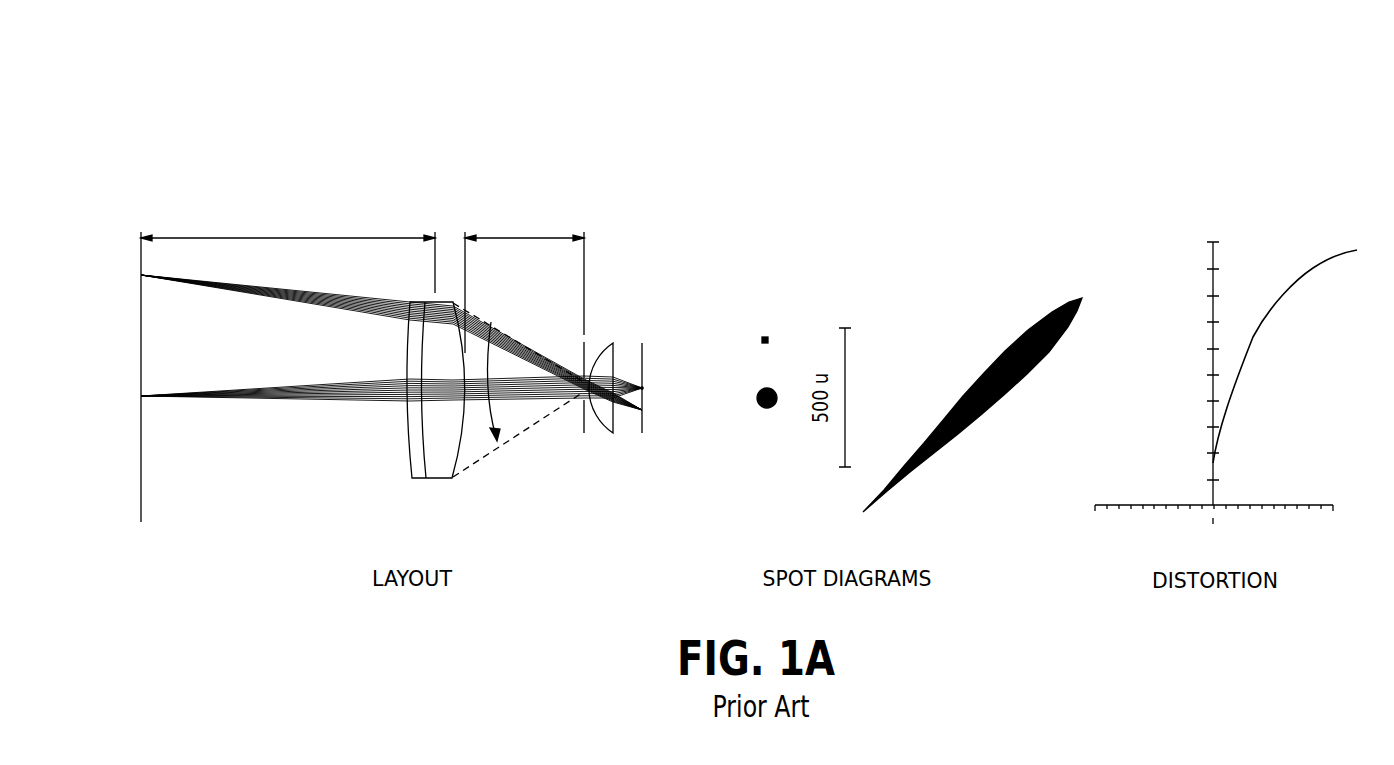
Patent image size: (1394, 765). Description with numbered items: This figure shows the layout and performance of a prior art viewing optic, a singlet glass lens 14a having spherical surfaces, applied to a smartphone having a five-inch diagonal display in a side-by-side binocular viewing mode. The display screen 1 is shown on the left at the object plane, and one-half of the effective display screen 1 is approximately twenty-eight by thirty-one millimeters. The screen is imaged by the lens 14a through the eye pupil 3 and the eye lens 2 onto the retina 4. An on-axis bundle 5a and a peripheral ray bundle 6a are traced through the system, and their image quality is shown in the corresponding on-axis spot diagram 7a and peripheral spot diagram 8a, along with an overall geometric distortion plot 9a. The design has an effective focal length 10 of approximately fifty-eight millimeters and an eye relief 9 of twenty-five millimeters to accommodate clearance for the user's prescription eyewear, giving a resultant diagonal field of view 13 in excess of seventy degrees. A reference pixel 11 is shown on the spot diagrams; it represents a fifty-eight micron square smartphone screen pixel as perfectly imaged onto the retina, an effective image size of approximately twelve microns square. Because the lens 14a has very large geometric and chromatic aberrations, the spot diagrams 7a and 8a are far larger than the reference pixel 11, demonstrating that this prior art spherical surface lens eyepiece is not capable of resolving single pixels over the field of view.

The display screen 1 is at (141, 487).
The eye lens 2 is at (619, 354).
The eye pupil 3 is at (577, 406).
The retina 4 is at (647, 352).
The on-axis bundle 5a is at (215, 400).
The peripheral ray bundle 6a is at (222, 290).
The on-axis spot diagram 7a is at (648, 388).
The peripheral spot diagram 8a is at (644, 435).
The eye relief 9 is at (562, 238).
The geometric distortion plot 9a is at (1181, 258).
The effective focal length 10 is at (378, 238).
The reference pixel 11 is at (772, 334).
The diagonal field of view 13 is at (500, 418).
The singlet glass lens 14a is at (446, 480).